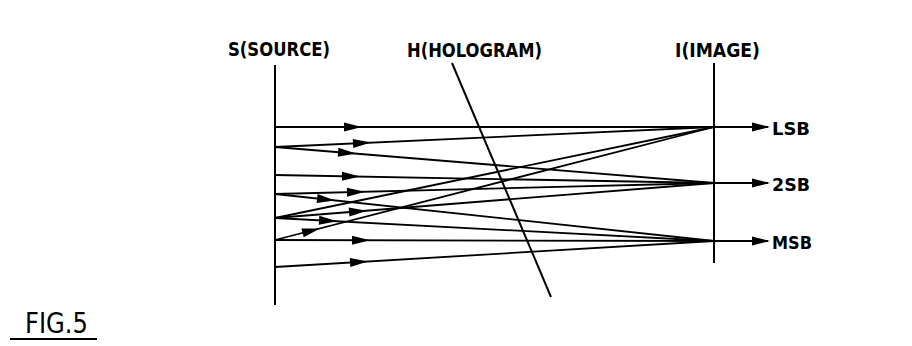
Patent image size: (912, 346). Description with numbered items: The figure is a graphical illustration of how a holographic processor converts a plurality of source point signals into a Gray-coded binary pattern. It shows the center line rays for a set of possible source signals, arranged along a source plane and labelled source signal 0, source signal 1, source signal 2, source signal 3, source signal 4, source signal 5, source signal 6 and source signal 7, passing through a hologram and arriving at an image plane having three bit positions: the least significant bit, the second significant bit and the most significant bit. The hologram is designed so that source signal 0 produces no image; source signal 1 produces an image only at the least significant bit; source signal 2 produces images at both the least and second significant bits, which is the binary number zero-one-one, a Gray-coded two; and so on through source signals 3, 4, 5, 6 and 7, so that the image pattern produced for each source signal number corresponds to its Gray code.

The source signal 0 is at (275, 103).
The source signal 1 is at (275, 127).
The source signal 2 is at (275, 147).
The source signal 3 is at (275, 175).
The source signal 4 is at (275, 194).
The source signal 5 is at (275, 218).
The source signal 6 is at (275, 240).
The source signal 7 is at (275, 267).